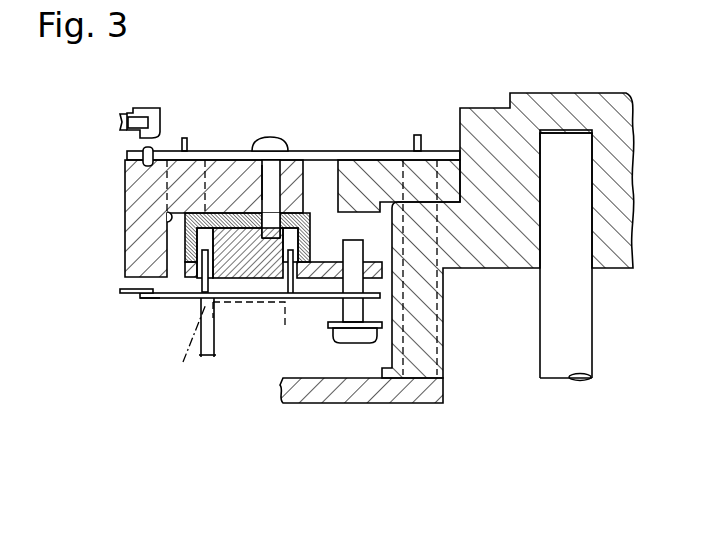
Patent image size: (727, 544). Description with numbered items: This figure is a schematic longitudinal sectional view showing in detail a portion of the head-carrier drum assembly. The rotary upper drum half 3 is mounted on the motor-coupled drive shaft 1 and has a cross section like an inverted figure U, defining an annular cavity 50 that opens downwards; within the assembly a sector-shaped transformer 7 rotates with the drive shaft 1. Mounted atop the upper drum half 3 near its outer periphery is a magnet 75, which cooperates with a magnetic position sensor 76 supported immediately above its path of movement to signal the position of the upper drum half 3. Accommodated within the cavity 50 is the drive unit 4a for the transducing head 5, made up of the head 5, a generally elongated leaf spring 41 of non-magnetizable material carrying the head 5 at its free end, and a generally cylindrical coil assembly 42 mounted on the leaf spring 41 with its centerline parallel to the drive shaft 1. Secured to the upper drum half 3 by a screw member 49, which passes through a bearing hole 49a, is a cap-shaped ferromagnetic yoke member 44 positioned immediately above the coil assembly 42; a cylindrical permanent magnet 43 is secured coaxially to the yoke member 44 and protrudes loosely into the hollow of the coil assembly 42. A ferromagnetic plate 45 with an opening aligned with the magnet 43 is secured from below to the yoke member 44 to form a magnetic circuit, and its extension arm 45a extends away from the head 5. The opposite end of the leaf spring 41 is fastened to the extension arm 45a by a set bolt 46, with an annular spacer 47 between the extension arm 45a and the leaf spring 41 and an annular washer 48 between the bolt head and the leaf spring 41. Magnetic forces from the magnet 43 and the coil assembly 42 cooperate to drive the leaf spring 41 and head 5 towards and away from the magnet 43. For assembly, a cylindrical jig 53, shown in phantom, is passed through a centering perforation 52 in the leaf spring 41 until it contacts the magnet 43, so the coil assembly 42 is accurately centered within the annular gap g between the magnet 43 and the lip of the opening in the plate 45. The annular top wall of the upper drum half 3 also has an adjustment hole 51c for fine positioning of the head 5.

The drive shaft 1 is at (587, 318).
The upper drum half 3 is at (130, 158).
The drive unit 4a is at (147, 316).
The transducing head 5 is at (133, 289).
The sector-shaped transformer 7 is at (443, 393).
The leaf spring 41 is at (143, 300).
The coil assembly 42 is at (213, 288).
The permanent magnet 43 is at (262, 285).
The yoke member 44 is at (187, 235).
The ferromagnetic plate 45 is at (190, 280).
The extension arm 45a is at (318, 279).
The set bolt 46 is at (373, 337).
The annular spacer 47 is at (373, 287).
The annular washer 48 is at (373, 310).
The screw member 49 is at (285, 150).
The bearing hole 49a is at (261, 178).
The annular cavity 50 is at (167, 217).
The adjustment hole 51c is at (343, 159).
The centering perforation 52 is at (239, 285).
The cylindrical jig 53 is at (179, 345).
The magnet 75 is at (150, 150).
The magnetic position sensor 76 is at (143, 110).
The annular gap g is at (207, 357).